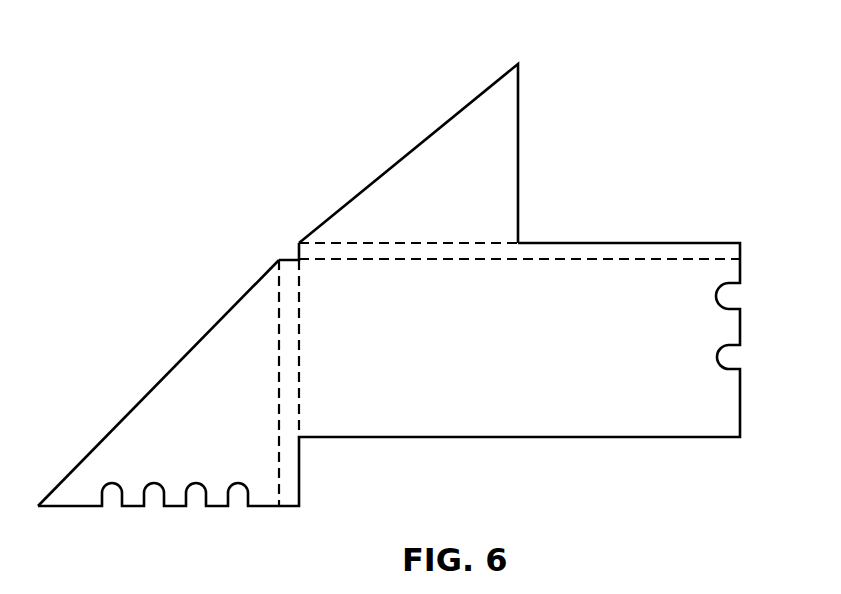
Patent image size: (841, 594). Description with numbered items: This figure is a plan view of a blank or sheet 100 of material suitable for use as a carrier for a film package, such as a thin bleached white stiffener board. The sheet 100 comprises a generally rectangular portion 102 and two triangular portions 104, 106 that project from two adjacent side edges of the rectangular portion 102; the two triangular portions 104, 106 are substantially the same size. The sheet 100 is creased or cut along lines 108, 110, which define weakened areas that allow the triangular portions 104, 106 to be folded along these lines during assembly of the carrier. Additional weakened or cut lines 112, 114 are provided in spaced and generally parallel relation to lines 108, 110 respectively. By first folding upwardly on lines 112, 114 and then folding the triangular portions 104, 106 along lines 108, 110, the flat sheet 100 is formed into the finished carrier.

The sheet 100 is at (622, 185).
The rectangular portion 102 is at (658, 415).
The triangular portion 104 is at (209, 353).
The triangular portion 106 is at (370, 195).
The line 108 is at (277, 355).
The line 110 is at (385, 243).
The line 112 is at (304, 400).
The line 114 is at (598, 259).